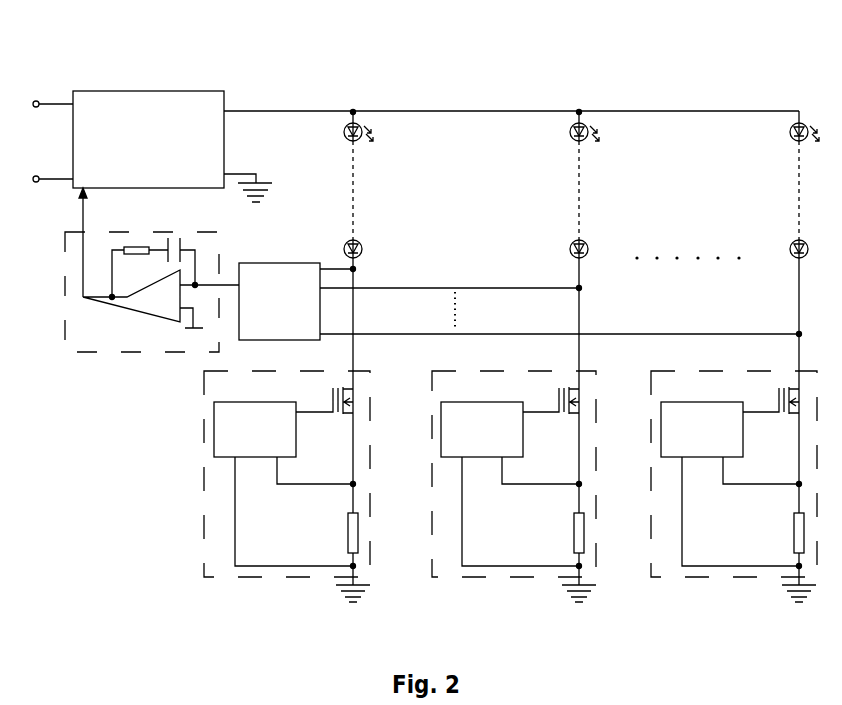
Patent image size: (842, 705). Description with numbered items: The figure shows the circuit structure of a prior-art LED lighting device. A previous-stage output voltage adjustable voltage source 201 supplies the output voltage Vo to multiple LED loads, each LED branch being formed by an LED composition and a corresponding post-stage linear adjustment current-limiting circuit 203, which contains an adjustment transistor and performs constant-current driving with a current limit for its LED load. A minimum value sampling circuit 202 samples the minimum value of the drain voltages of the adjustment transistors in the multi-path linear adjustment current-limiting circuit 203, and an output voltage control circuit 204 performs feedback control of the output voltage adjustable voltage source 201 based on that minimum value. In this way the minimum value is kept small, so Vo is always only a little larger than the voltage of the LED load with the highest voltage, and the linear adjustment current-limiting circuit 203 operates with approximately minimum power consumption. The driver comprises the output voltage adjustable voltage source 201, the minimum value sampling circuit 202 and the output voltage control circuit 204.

The output voltage adjustable voltage source 201 is at (148, 91).
The minimum value sampling circuit 202 is at (275, 263).
The linear adjustment current-limiting circuit 203 is at (275, 577).
The output voltage control circuit 204 is at (128, 352).